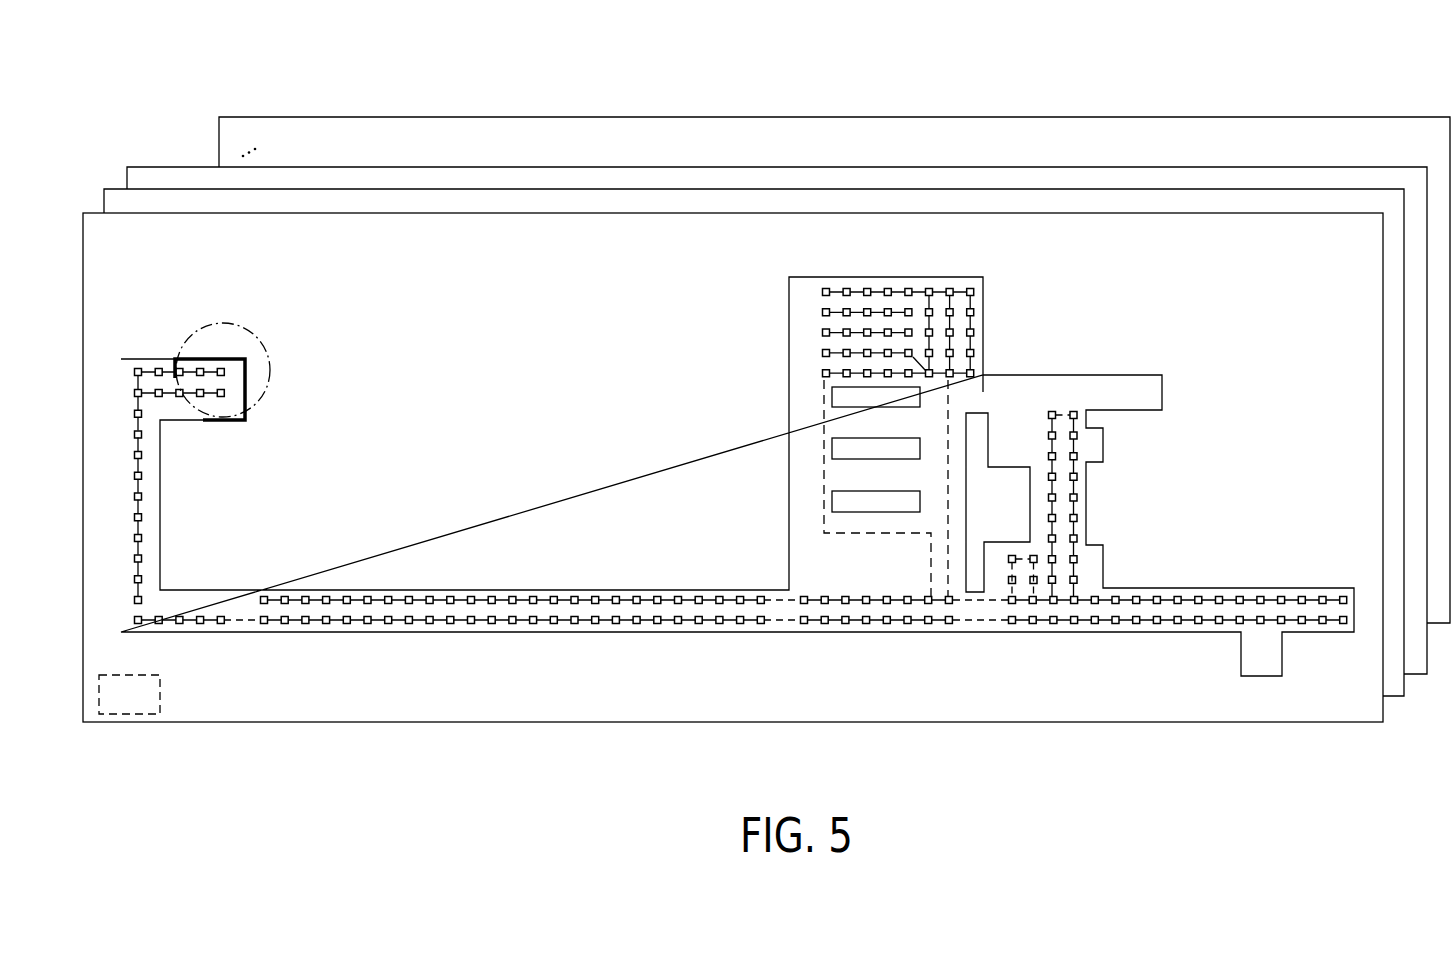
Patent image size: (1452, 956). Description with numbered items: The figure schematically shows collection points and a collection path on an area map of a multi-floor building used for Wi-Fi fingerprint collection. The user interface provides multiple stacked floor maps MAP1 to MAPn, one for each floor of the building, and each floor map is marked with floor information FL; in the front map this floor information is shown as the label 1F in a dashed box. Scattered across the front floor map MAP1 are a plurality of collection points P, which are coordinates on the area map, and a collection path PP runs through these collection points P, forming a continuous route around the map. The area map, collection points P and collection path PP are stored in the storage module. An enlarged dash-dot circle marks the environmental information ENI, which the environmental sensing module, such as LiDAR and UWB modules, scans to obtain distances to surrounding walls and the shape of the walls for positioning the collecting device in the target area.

The floor map MAPn is at (257, 117).
The floor map MAP1 is at (151, 212).
The collection path PP is at (153, 358).
The collection point P is at (222, 368).
The environmental information ENI is at (270, 353).
The first floor label 1F is at (126, 699).
The floor information FL is at (129, 726).